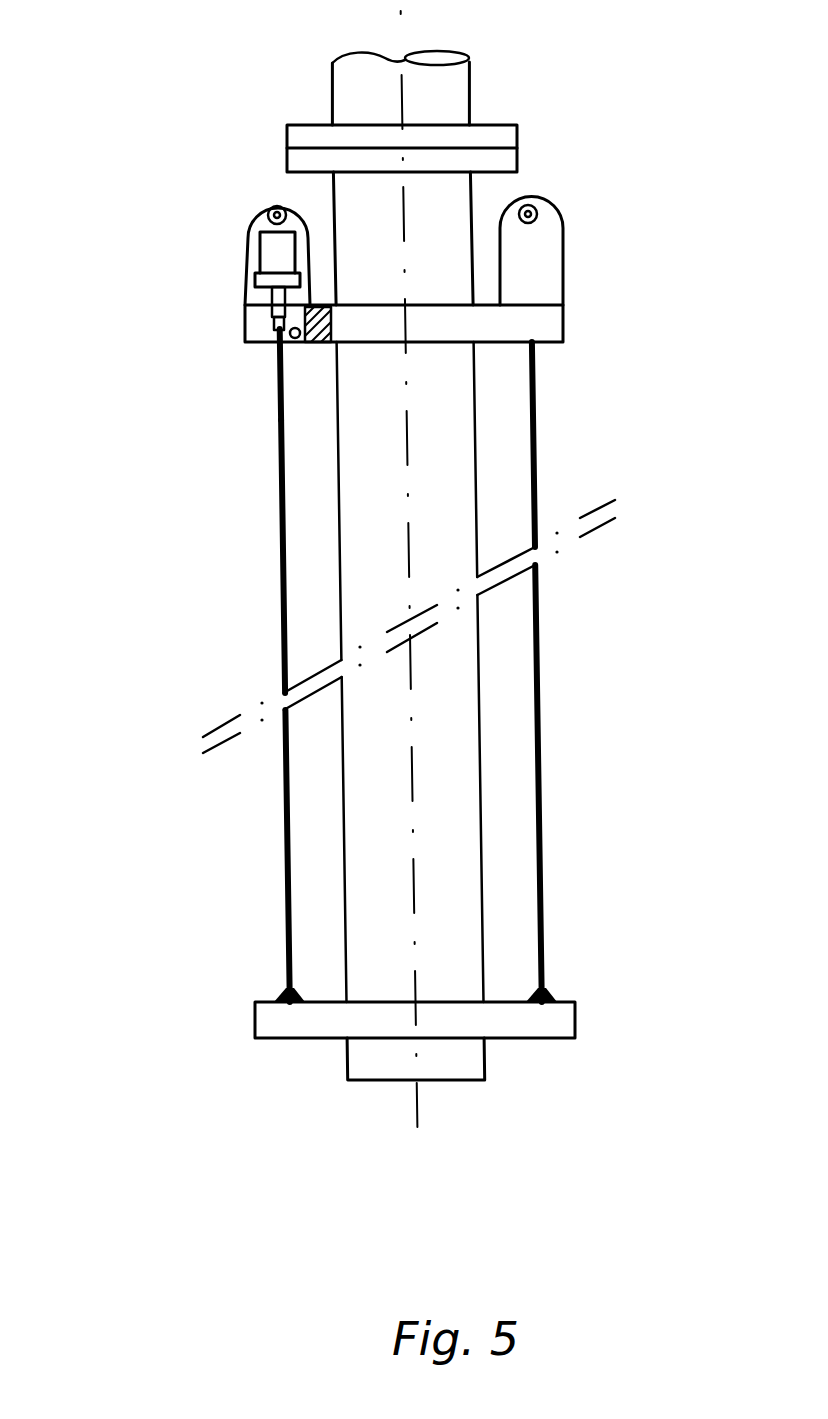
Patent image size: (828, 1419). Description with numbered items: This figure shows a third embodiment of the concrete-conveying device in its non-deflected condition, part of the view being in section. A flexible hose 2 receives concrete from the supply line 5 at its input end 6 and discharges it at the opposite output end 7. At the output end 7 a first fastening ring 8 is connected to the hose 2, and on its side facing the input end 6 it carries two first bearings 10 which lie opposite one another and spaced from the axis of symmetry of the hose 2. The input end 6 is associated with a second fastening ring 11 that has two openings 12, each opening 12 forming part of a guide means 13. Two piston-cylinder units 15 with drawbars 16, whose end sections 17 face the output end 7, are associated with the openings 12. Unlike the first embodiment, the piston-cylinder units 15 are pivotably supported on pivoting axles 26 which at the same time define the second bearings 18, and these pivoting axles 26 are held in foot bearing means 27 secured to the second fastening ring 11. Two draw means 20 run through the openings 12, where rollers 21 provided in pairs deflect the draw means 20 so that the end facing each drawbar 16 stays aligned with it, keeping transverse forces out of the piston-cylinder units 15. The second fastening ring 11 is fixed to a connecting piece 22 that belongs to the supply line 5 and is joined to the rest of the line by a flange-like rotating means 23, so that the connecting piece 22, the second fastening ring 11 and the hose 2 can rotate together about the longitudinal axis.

The hose 2 is at (455, 667).
The supply line 5 is at (367, 90).
The input end 6 is at (452, 437).
The output end 7 is at (365, 1053).
The first fastening ring 8 is at (562, 1022).
The first bearings 10 is at (261, 987).
The second fastening ring 11 is at (555, 323).
The openings 12 is at (252, 319).
The guide means 13 is at (238, 358).
The piston-cylinder units 15 is at (277, 253).
The drawbars 16 is at (247, 306).
The end sections 17 is at (279, 323).
The second bearings 18 is at (273, 206).
The draw means 20 is at (287, 812).
The rollers 21 is at (277, 345).
The connecting piece 22 is at (355, 230).
The rotating means 23 is at (554, 149).
The pivoting axles 26 is at (533, 222).
The foot bearing means 27 is at (545, 275).